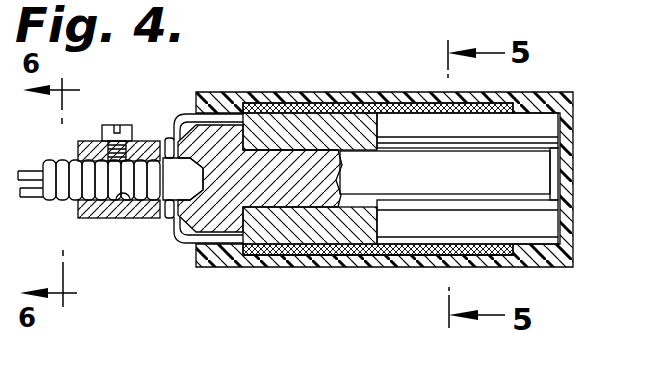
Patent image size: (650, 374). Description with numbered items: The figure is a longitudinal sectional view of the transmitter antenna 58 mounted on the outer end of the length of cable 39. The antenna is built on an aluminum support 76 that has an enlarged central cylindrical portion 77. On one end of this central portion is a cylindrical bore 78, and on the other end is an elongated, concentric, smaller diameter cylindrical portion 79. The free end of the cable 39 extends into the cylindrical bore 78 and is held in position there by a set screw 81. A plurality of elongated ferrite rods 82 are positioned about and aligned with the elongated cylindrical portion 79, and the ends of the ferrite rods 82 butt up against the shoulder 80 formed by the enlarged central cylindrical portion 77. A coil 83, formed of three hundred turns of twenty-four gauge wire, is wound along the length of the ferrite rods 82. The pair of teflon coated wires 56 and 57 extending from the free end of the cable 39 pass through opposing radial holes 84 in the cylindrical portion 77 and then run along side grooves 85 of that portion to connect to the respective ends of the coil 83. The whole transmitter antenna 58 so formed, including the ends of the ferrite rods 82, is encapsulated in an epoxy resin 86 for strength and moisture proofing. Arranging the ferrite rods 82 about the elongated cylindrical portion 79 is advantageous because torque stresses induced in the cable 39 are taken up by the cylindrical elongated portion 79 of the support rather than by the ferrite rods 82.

The cable 39 is at (63, 219).
The teflon coated wire 56 is at (18, 170).
The teflon coated wire 57 is at (22, 199).
The transmitter antenna 58 is at (314, 272).
The aluminum support 76 is at (215, 203).
The enlarged central cylindrical portion 77 is at (215, 133).
The cylindrical bore 78 is at (124, 205).
The elongated concentric smaller diameter cylindrical portion 79 is at (515, 182).
The shoulder 80 is at (250, 140).
The set screw 81 is at (110, 125).
The ferrite rods 82 is at (537, 122).
The coil 83 is at (393, 108).
The radial holes 84 is at (167, 137).
The side grooves 85 is at (195, 117).
The epoxy resin 86 is at (353, 268).